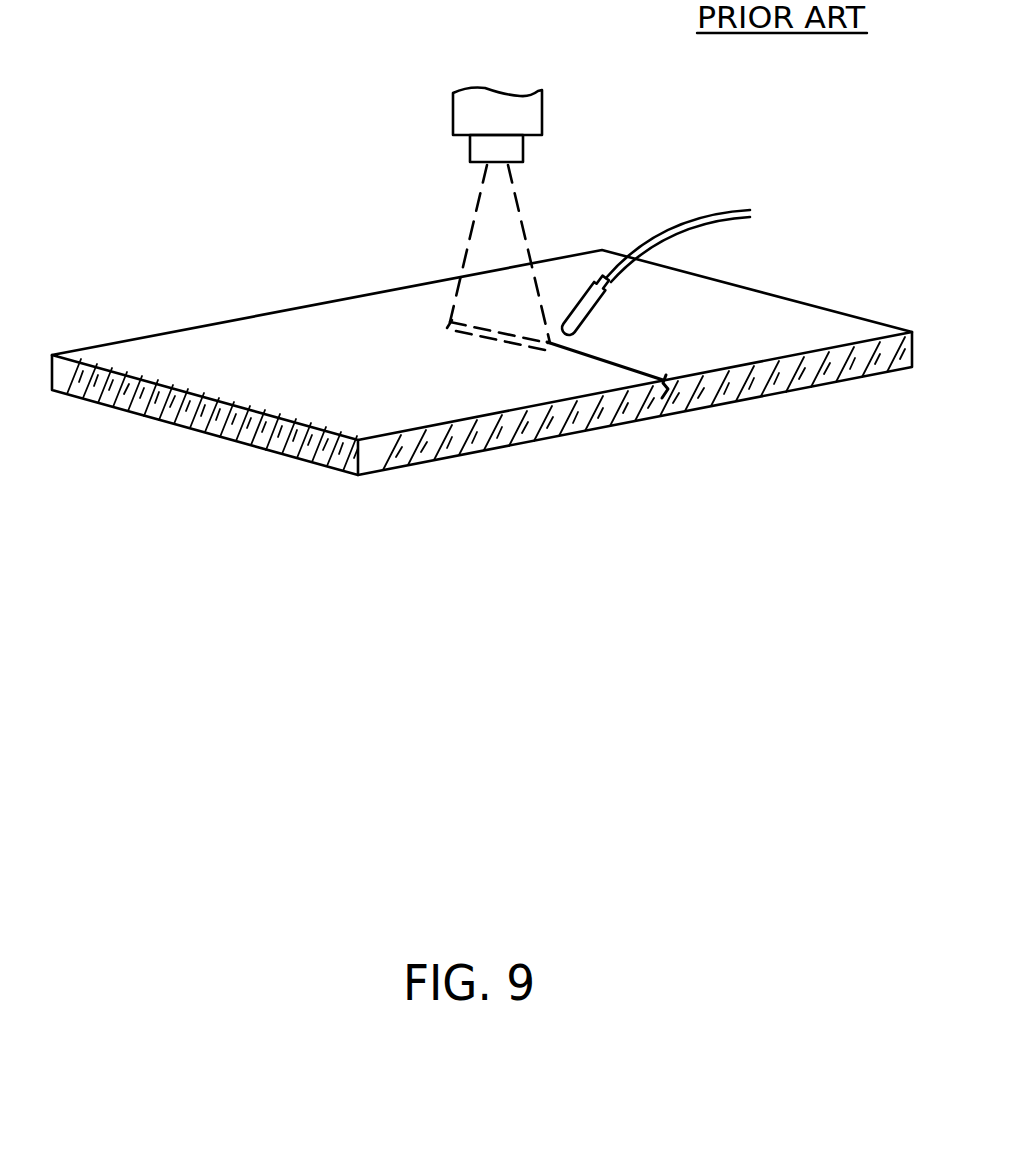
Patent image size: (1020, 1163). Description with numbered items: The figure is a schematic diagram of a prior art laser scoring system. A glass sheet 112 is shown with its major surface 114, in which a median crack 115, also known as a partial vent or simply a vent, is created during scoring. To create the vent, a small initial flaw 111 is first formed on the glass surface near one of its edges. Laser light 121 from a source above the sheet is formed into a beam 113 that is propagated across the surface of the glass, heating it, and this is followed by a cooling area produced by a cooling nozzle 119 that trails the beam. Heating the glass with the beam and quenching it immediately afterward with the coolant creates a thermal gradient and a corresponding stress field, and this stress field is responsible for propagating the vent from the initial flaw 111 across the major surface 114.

The initial flaw 111 is at (680, 403).
The glass sheet 112 is at (780, 390).
The beam 113 is at (480, 333).
The major surface 114 is at (298, 338).
The median crack 115 is at (645, 371).
The cooling nozzle 119 is at (590, 315).
The laser light 121 is at (525, 233).